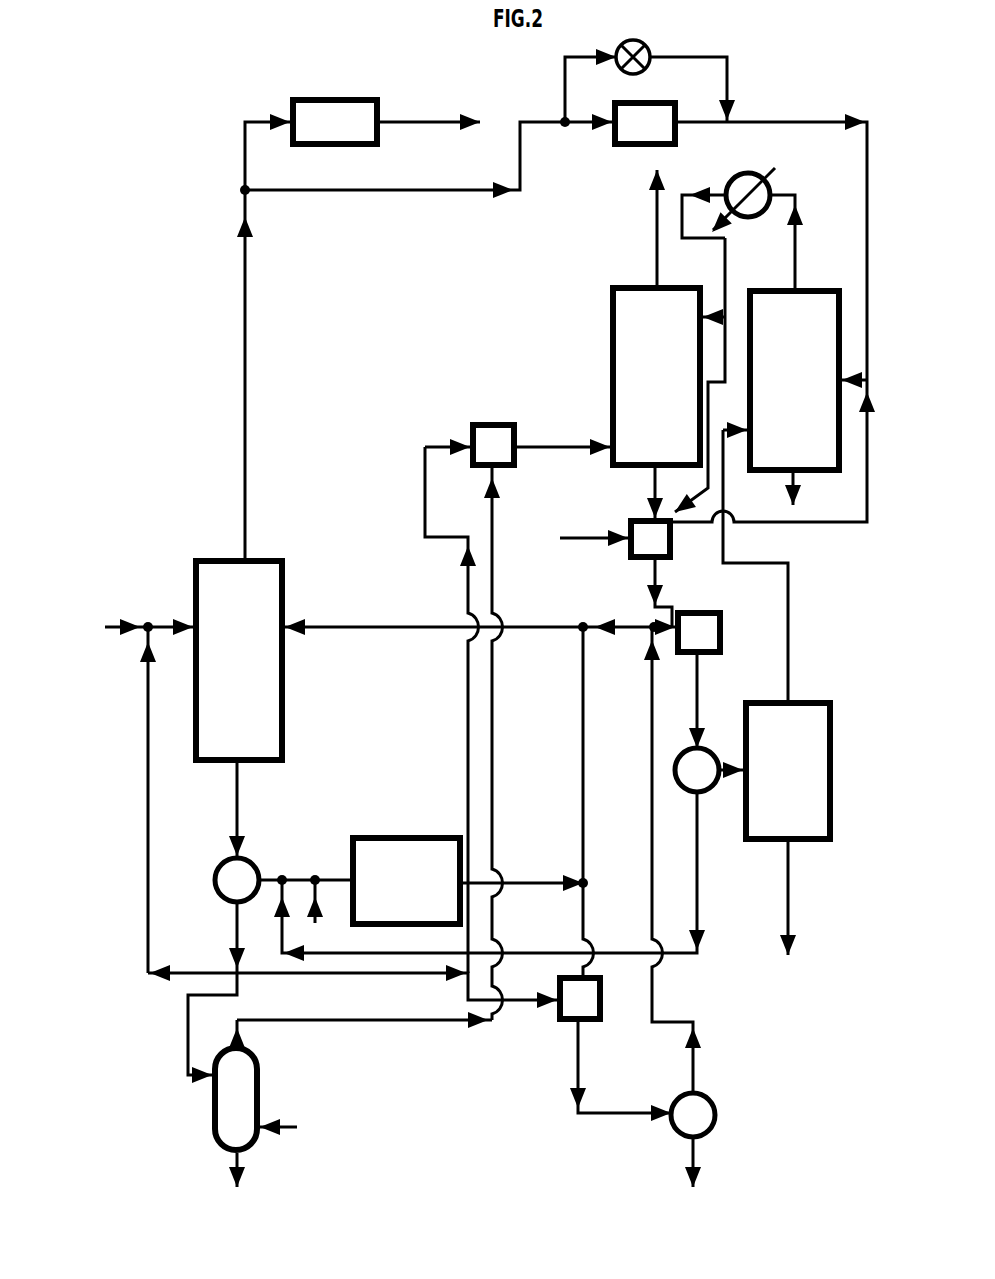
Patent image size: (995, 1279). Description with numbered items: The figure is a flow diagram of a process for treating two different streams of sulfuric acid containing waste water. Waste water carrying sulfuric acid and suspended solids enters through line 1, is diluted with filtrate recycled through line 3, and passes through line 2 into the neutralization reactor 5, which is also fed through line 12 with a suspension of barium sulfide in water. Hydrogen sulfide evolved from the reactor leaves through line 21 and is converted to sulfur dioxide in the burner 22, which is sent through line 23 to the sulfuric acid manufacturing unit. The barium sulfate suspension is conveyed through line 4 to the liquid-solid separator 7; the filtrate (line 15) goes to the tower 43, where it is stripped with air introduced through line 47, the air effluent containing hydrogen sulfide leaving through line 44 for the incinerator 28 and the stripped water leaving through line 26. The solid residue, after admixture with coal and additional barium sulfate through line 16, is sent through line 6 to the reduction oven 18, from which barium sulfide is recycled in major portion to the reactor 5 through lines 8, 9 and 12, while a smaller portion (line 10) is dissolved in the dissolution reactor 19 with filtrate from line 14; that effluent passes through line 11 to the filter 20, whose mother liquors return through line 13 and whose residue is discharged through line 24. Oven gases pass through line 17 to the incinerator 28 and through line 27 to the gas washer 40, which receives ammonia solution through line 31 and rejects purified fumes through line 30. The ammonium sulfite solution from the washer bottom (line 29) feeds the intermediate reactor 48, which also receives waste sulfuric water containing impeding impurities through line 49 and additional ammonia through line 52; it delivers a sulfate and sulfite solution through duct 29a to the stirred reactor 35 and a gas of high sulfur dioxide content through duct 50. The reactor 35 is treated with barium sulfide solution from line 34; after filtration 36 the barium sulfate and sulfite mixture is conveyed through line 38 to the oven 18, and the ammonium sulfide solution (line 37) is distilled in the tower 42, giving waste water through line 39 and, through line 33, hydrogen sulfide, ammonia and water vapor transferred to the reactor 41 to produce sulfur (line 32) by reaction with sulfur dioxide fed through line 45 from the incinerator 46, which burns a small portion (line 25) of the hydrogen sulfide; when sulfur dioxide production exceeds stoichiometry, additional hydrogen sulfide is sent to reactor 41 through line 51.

The feed line 1 is at (110, 625).
The diluted waste water line 2 is at (165, 625).
The filtrate recycle line 3 is at (148, 757).
The suspension line 4 is at (237, 808).
The neutralization reactor 5 is at (193, 558).
The solid residue line 6 is at (331, 878).
The liquid-solid separator 7 is at (215, 876).
The barium sulfide recycle line 8 is at (527, 880).
The barium sulfide recycle line 9 is at (583, 758).
The barium sulfide line 10 is at (583, 922).
The effluent line 11 is at (578, 1062).
The barium sulfide suspension line 12 is at (387, 627).
The mother liquor return line 13 is at (652, 783).
The filtrate line 14 is at (300, 974).
The filtrate line 15 is at (188, 1037).
The additional barium sulfate line 16 is at (316, 923).
The oven gas line 17 is at (425, 485).
The reduction oven 18 is at (400, 835).
The dissolution reactor 19 is at (560, 1024).
The filter 20 is at (716, 1115).
The hydrogen sulfide line 21 is at (245, 318).
The burner 22 is at (340, 97).
The sulfur dioxide line 23 is at (427, 122).
The residue discharge line 24 is at (700, 1160).
The hydrogen sulfide branch line 25 is at (430, 190).
The water outlet line 26 is at (225, 1168).
The fume line 27 is at (544, 443).
The incinerator 28 is at (496, 422).
The ammonium sulfite solution line 29 is at (655, 492).
The sulfate and sulfite solution duct 29a is at (650, 577).
The purified fume outlet line 30 is at (657, 222).
The ammonia solution line 31 is at (712, 188).
The sulfur line 32 is at (803, 492).
The tower overhead line 33 is at (790, 588).
The barium sulfide solution line 34 is at (665, 622).
The stirred reactor 35 is at (716, 612).
The filtration 36 is at (686, 792).
The ammonium sulfide solution line 37 is at (725, 785).
The barium salt line 38 is at (697, 877).
The waste water line 39 is at (788, 920).
The gas washer 40 is at (610, 345).
The sulfur production reactor 41 is at (807, 290).
The distillation tower 42 is at (833, 765).
The stripping tower 43 is at (212, 1122).
The air effluent line 44 is at (315, 1020).
The sulfur dioxide feed line 45 is at (768, 122).
The incinerator 46 is at (628, 148).
The air inlet line 47 is at (297, 1127).
The intermediate reactor 48 is at (673, 558).
The waste sulfuric water line 49 is at (578, 538).
The sulfur dioxide effluent duct 50 is at (805, 522).
The additional hydrogen sulfide line 51 is at (648, 49).
The additional ammonia line 52 is at (728, 330).